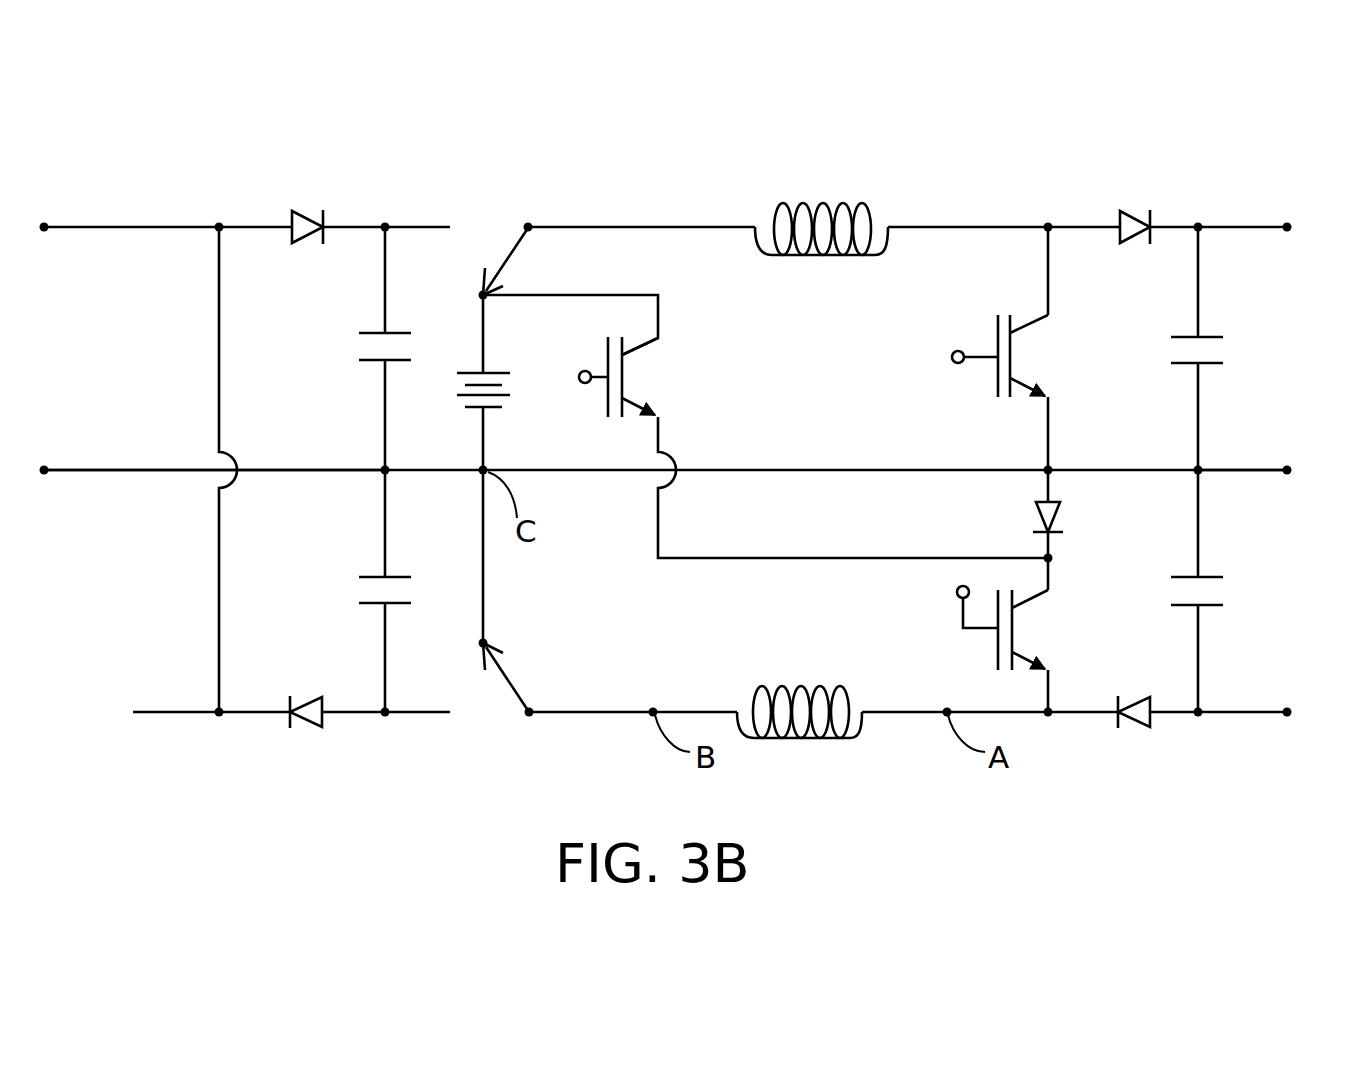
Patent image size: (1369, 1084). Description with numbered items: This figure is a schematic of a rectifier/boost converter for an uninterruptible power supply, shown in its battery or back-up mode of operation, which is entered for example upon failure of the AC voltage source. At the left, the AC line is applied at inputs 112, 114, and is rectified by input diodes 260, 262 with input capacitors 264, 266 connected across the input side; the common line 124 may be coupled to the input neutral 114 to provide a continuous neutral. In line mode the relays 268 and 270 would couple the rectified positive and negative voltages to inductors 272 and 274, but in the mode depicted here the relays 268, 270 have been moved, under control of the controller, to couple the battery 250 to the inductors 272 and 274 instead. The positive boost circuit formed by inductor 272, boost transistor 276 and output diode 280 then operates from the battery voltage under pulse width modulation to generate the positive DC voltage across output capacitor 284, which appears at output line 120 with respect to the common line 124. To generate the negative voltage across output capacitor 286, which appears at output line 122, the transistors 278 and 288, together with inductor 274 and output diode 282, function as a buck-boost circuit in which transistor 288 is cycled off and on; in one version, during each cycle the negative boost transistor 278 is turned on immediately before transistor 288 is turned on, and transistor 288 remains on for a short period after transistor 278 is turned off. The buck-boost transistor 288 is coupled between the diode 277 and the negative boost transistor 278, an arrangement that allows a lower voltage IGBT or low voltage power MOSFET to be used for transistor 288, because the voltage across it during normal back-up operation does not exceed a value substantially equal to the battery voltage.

The input 112 is at (47, 225).
The input neutral 114 is at (47, 468).
The output line 120 is at (1290, 230).
The output line 122 is at (1290, 714).
The common line 124 is at (1290, 472).
The battery 250 is at (508, 395).
The input diode 260 is at (302, 218).
The input diode 262 is at (306, 724).
The input capacitor 264 is at (358, 345).
The input capacitor 266 is at (358, 590).
The relay 268 is at (506, 260).
The relay 270 is at (506, 678).
The inductor 272 is at (822, 200).
The inductor 274 is at (793, 740).
The boost transistor 276 is at (1038, 353).
The diode 277 is at (1062, 512).
The boost transistor 278 is at (1053, 597).
The output diode 280 is at (1123, 210).
The output diode 282 is at (1130, 727).
The output capacitor 284 is at (1222, 348).
The output capacitor 286 is at (1223, 592).
The transistor 288 is at (640, 373).